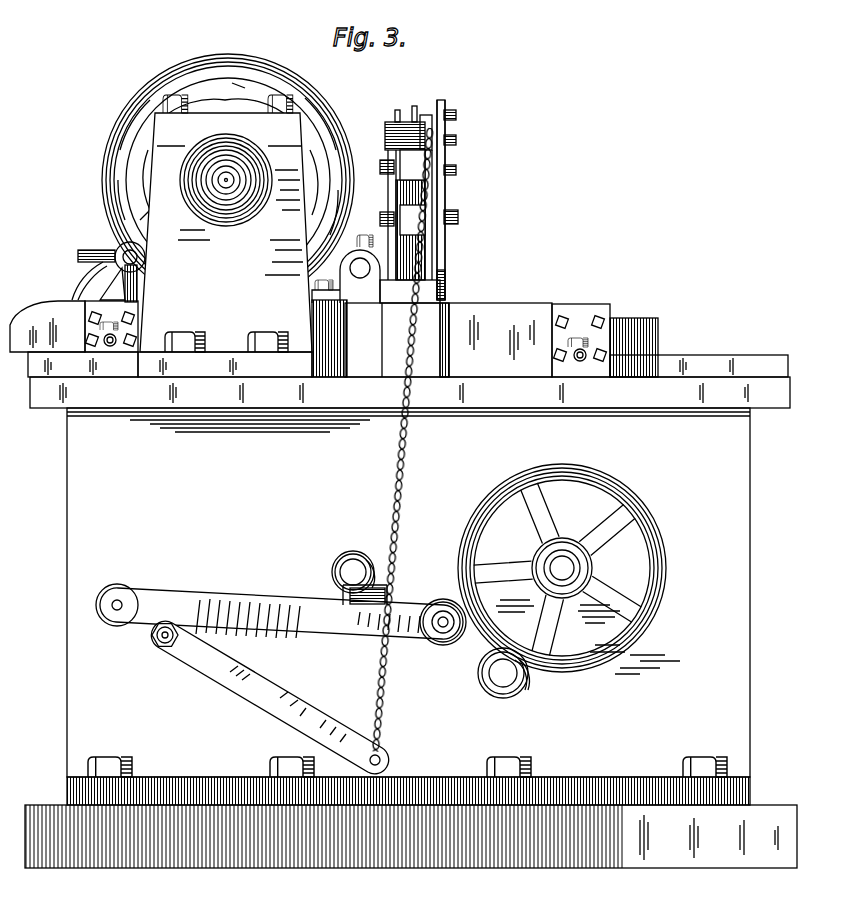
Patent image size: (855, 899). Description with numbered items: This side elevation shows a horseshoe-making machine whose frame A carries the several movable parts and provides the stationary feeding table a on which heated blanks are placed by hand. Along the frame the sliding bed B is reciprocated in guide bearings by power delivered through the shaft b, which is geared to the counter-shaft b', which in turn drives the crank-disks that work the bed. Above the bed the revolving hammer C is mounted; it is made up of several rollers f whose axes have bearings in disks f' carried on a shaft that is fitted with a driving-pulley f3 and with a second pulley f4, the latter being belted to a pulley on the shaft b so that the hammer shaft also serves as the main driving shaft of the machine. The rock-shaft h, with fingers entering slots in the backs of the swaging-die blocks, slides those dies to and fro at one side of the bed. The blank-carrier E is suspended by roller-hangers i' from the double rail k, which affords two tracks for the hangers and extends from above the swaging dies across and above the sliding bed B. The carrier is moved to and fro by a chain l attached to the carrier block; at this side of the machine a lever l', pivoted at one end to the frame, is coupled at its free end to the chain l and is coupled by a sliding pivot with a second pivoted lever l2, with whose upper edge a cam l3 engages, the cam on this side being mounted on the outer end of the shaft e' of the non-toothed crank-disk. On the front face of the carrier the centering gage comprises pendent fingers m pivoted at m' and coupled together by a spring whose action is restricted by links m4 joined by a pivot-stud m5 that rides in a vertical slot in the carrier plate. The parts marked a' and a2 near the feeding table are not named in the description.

The driving-pulley f3 is at (228, 176).
The rollers f is at (228, 180).
The disks f' is at (243, 93).
The pulley f4 is at (217, 180).
The revolving hammer C is at (225, 234).
The feeding bed or table a is at (83, 281).
The roller a' is at (123, 253).
The blade a2 is at (118, 283).
The sliding bed B is at (399, 337).
The blank-carrier E is at (419, 192).
The roller-hangers i' is at (408, 121).
The double rail k is at (412, 165).
The pendent fingers m is at (452, 200).
The pivot m' is at (462, 176).
The links m4 is at (457, 117).
The pivot-stud m5 is at (457, 142).
The rock-shaft h is at (346, 269).
The frame A is at (410, 577).
The shaft b is at (569, 569).
The counter-shaft b' is at (503, 673).
The shaft e' is at (353, 572).
The cam l3 is at (356, 596).
The second pivoted lever l2 is at (281, 614).
The lever l' is at (269, 697).
The chain l is at (402, 440).